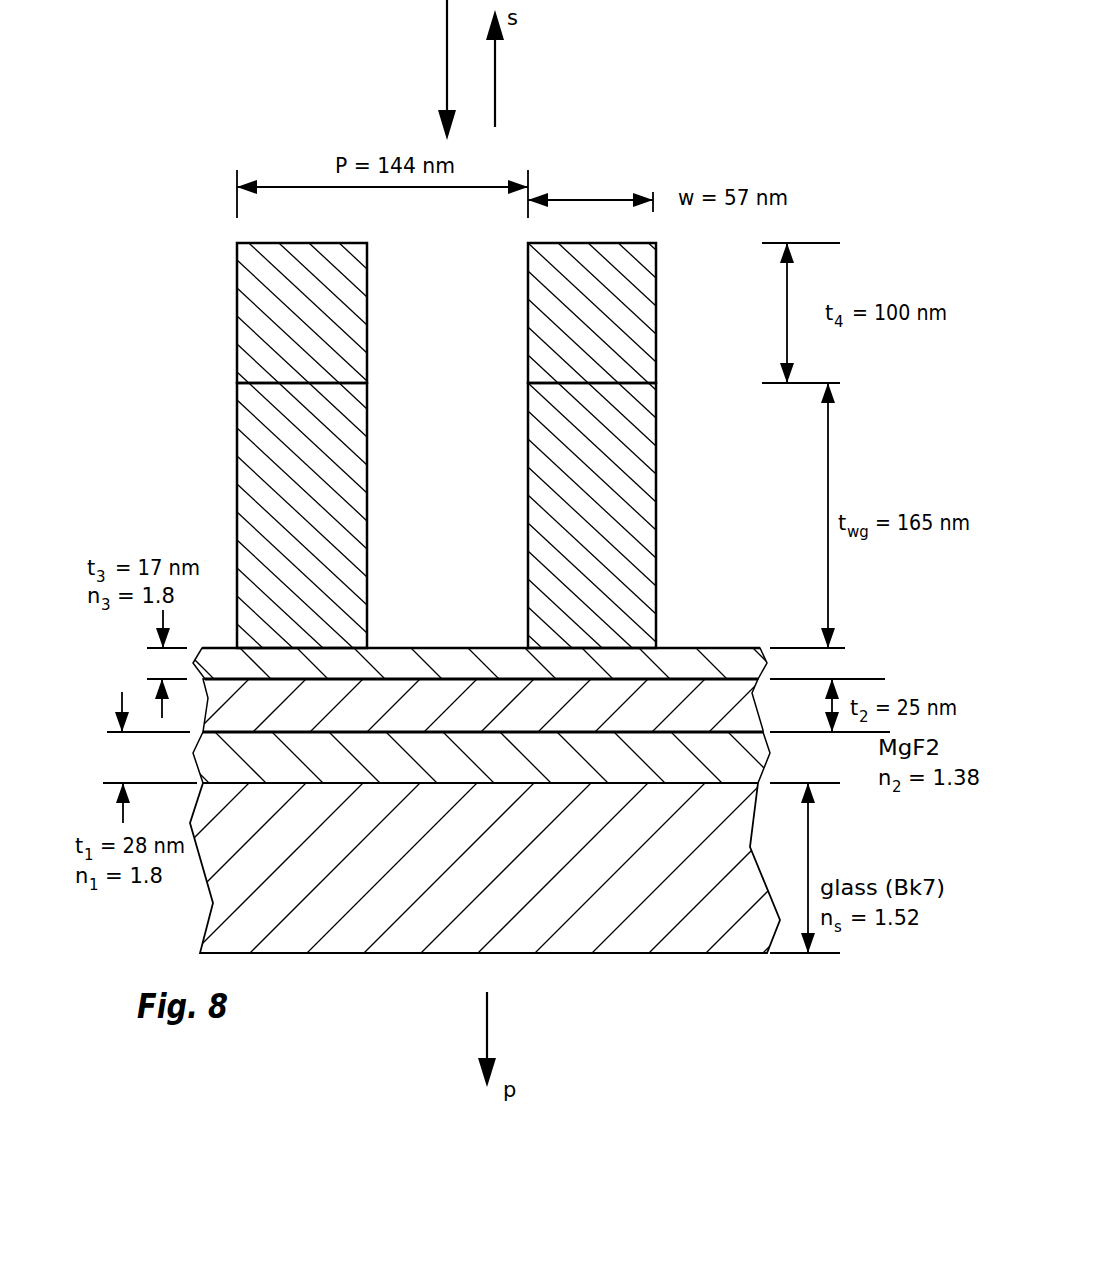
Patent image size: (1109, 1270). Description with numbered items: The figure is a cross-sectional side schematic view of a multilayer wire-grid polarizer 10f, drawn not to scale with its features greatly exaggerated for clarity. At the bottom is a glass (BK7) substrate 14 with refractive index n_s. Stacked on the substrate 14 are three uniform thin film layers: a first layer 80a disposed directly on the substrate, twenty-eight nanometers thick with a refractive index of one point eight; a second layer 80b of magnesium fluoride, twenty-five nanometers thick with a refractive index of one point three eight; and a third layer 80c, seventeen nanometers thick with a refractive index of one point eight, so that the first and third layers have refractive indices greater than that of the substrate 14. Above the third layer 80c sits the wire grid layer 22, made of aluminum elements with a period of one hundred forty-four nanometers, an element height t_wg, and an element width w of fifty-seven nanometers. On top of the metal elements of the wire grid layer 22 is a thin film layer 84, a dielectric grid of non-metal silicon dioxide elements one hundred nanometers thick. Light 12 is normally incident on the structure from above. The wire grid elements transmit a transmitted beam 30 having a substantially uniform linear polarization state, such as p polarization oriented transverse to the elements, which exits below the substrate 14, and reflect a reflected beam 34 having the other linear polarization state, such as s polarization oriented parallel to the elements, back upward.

The multilayer wire-grid polarizer 10f is at (506, 692).
The light 12 is at (447, 63).
The glass substrate 14 is at (738, 953).
The wire grid layer 22 is at (237, 538).
The transmitted beam 30 is at (482, 1025).
The reflected beam 34 is at (495, 72).
The first layer 80a is at (683, 750).
The second layer 80b is at (650, 723).
The third layer 80c is at (617, 670).
The thin film layer 84 is at (237, 316).